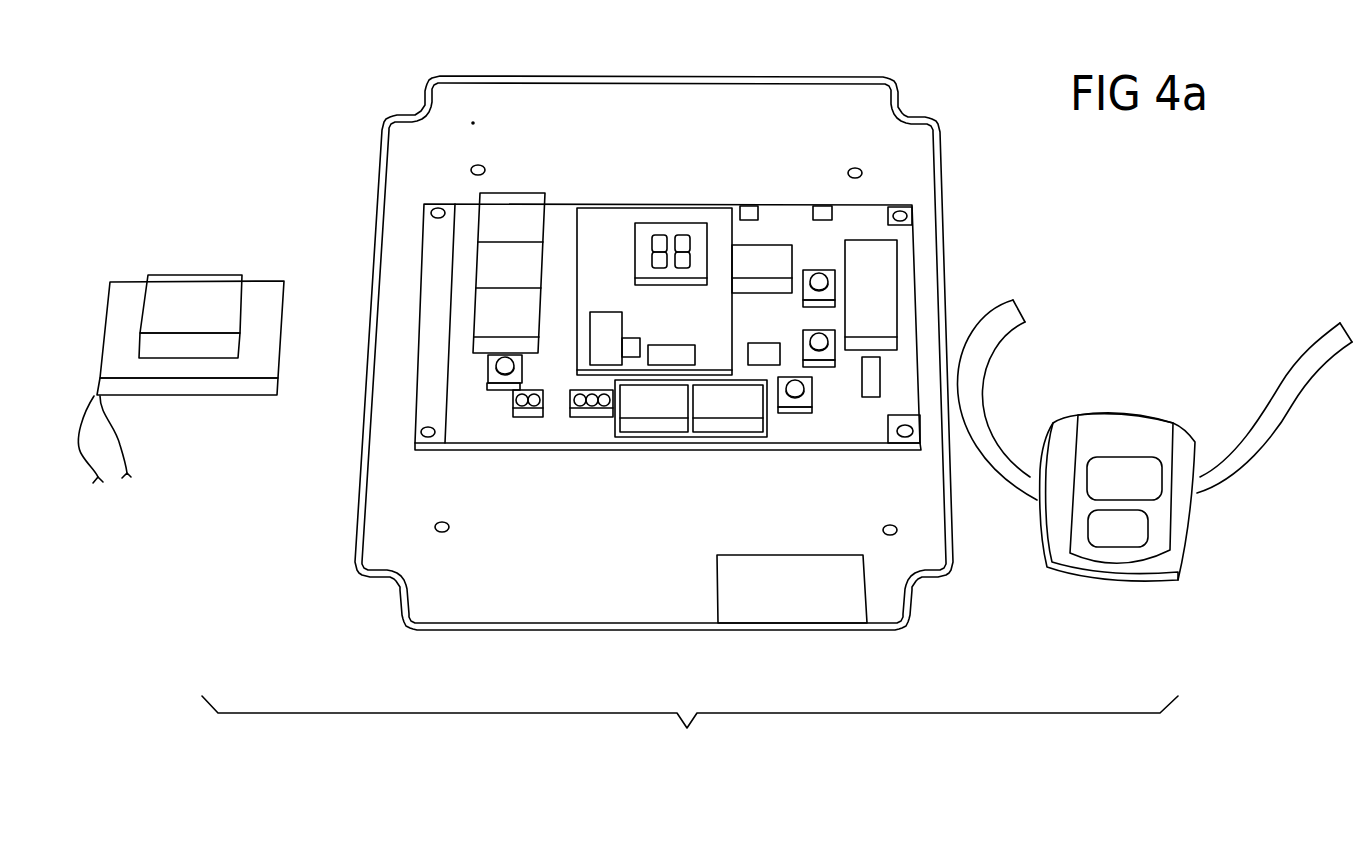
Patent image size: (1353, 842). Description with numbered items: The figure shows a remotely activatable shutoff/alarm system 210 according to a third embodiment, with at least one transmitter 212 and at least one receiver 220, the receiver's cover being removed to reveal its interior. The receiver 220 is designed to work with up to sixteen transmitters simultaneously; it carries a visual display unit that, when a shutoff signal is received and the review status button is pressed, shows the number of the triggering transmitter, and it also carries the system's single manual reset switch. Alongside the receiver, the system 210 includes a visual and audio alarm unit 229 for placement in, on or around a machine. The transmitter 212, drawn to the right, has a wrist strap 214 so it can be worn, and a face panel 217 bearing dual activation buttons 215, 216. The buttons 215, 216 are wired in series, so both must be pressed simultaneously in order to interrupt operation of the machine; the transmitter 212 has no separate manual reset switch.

The system 210 is at (690, 725).
The transmitter 212 is at (1154, 426).
The wrist strap 214 is at (1227, 495).
The activation button 215 is at (1124, 478).
The activation button 216 is at (1118, 528).
The remote control face panel 217 is at (1127, 423).
The receiver 220 is at (808, 162).
The visual and audio alarm unit 229 is at (228, 245).